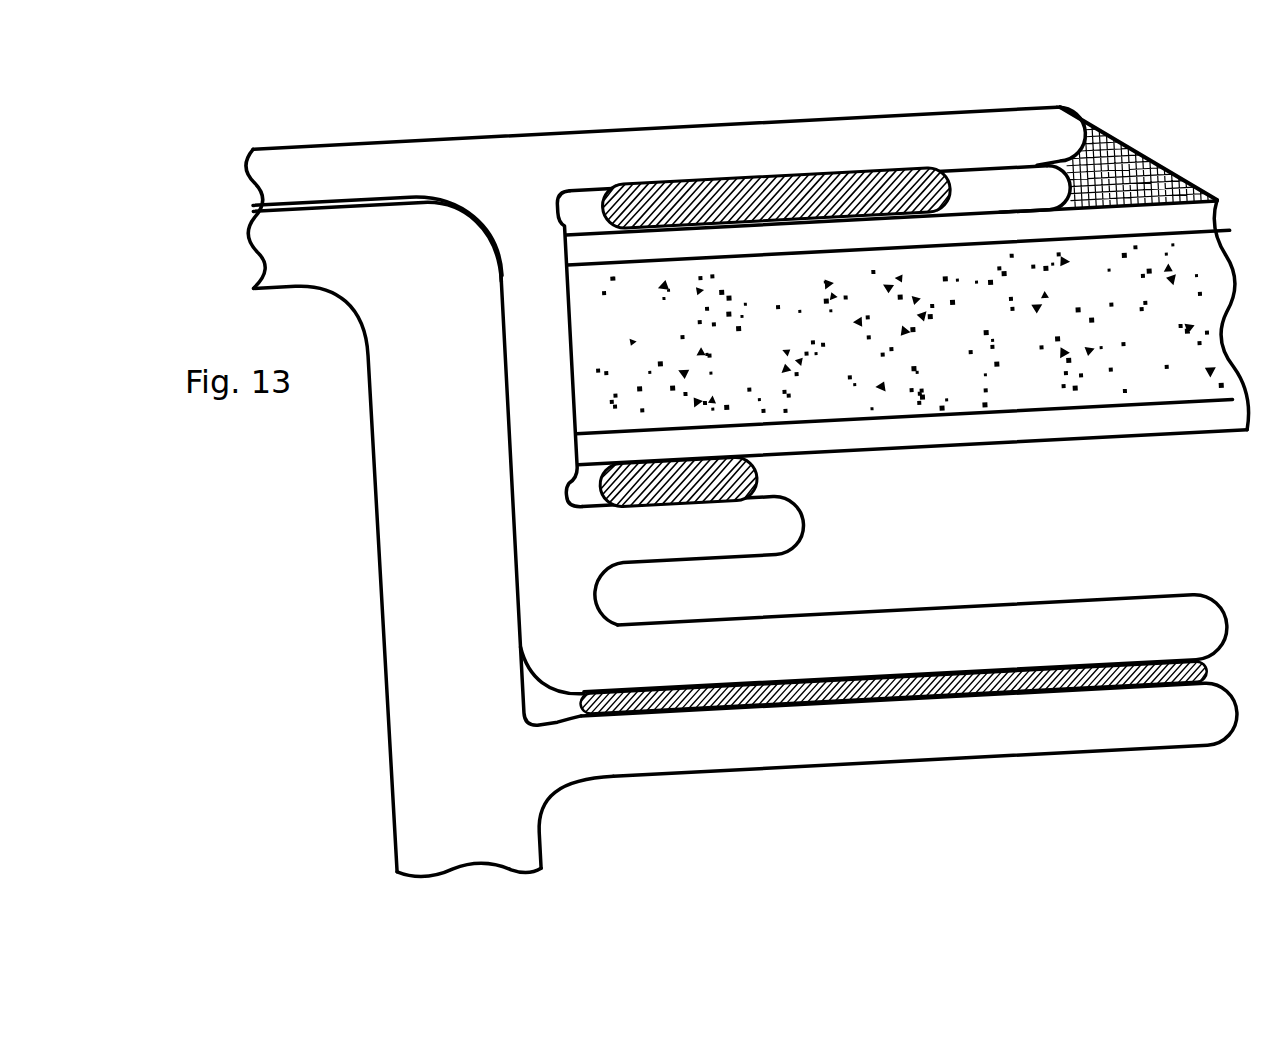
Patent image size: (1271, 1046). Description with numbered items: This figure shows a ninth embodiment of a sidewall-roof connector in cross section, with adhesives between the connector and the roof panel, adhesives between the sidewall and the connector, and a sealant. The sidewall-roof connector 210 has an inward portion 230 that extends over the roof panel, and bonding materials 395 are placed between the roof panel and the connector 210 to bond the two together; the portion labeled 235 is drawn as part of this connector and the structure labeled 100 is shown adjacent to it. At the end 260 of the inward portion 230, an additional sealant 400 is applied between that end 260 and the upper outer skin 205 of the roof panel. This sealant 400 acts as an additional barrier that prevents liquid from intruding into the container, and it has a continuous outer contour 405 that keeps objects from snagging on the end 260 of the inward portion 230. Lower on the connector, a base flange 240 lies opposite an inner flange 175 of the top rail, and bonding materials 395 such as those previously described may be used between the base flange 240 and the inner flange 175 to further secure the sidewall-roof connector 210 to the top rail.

The frame 100 is at (425, 590).
The inner flange 175 is at (930, 733).
The upper outer skin 205 is at (1030, 230).
The sidewall-roof connector 210 is at (545, 517).
The inward portion 230 is at (800, 155).
The hook arm of retaining member 235 is at (708, 543).
The base flange 240 is at (1025, 637).
The end of the inward portion 260 is at (1067, 140).
The bonding materials 395 is at (642, 190).
The sealant 400 is at (1120, 167).
The continuous outer contour 405 is at (1148, 163).